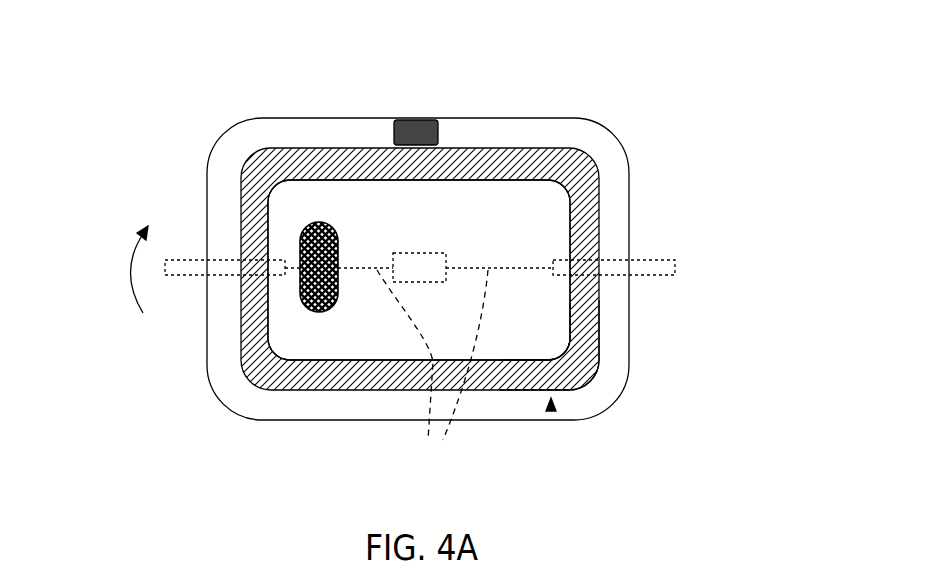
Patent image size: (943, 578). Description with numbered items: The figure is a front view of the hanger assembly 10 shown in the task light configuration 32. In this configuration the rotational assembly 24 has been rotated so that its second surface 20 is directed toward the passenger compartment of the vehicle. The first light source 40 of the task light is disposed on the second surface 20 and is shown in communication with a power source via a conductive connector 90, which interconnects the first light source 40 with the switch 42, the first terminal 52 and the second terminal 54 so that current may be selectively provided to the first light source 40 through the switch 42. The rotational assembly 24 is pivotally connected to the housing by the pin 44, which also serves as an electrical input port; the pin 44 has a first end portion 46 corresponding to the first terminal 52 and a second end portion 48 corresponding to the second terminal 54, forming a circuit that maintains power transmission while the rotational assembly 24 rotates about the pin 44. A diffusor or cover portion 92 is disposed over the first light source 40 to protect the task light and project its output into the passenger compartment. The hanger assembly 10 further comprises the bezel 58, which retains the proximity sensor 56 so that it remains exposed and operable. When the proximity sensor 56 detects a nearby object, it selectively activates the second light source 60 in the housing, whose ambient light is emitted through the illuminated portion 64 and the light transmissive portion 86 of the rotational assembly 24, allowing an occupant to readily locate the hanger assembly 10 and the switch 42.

The hanger assembly 10 is at (470, 217).
The task light configuration 32 is at (615, 62).
The second surface 20 is at (575, 150).
The rotational assembly 24 is at (318, 202).
The first light source 40 is at (420, 258).
The switch 42 is at (337, 224).
The pin 44 is at (197, 268).
The first end portion 46 is at (201, 227).
The first terminal 52 is at (186, 260).
The second end portion 48 is at (660, 246).
The second terminal 54 is at (660, 262).
The proximity sensor 56 is at (425, 118).
The bezel 58 is at (503, 130).
The second light source 60 is at (552, 422).
The illuminated portion 64 is at (590, 330).
The light transmissive portion 86 is at (583, 180).
The conductive connector 90 is at (432, 372).
The cover portion 92 is at (543, 333).